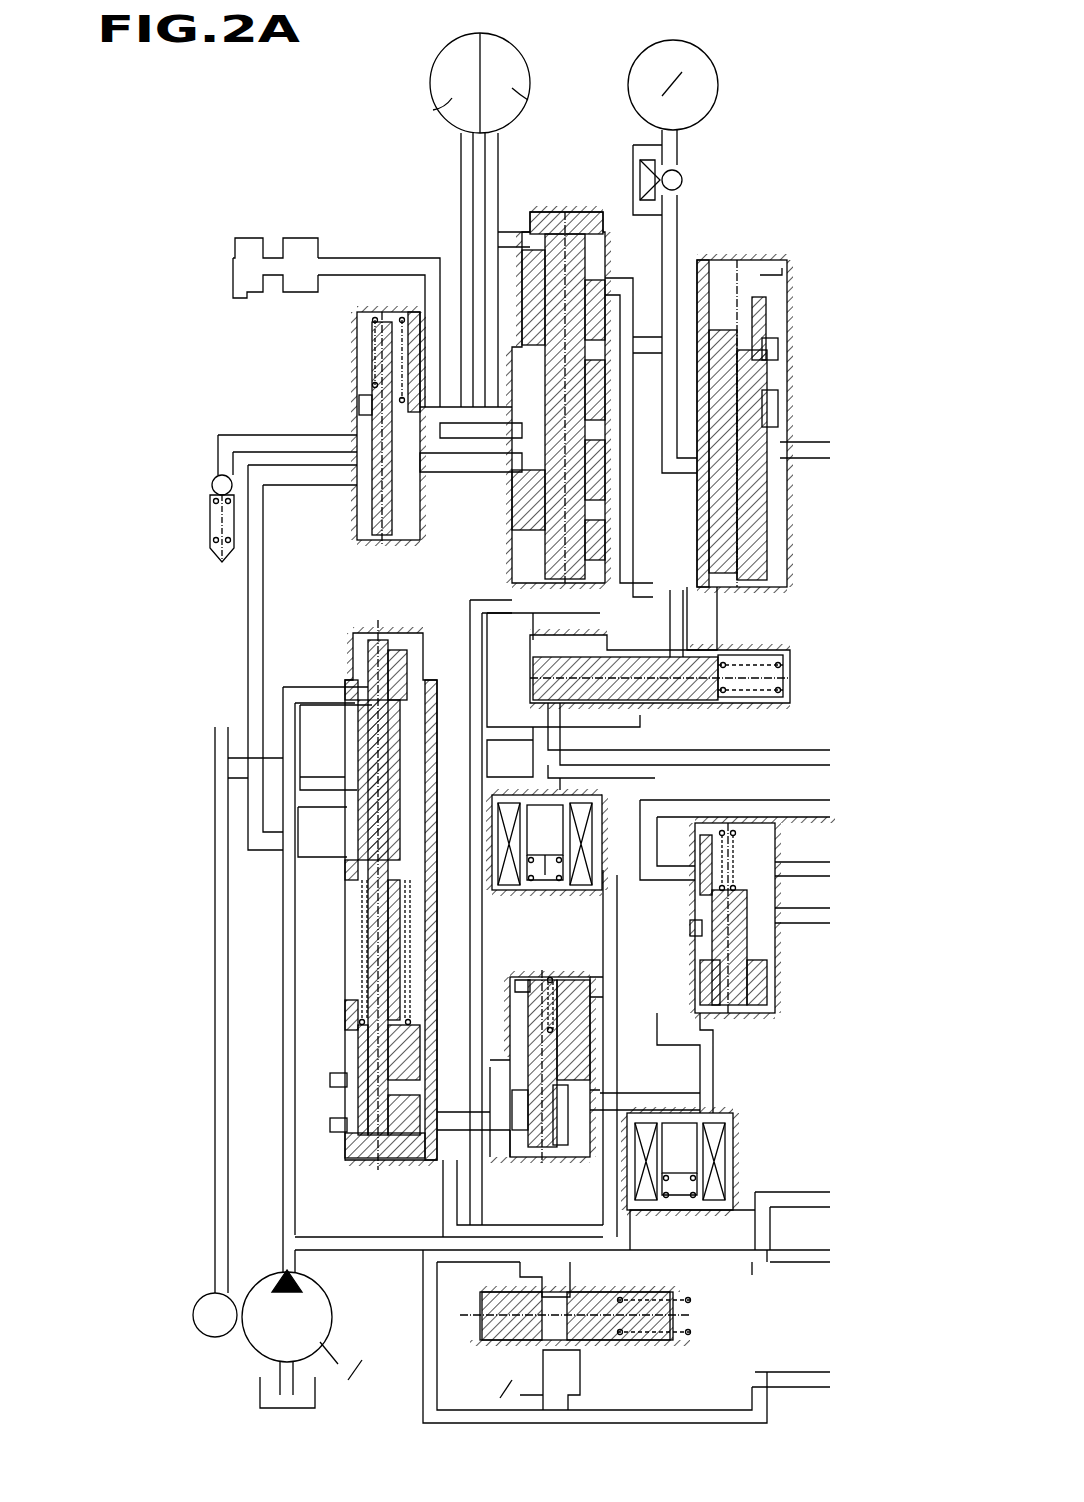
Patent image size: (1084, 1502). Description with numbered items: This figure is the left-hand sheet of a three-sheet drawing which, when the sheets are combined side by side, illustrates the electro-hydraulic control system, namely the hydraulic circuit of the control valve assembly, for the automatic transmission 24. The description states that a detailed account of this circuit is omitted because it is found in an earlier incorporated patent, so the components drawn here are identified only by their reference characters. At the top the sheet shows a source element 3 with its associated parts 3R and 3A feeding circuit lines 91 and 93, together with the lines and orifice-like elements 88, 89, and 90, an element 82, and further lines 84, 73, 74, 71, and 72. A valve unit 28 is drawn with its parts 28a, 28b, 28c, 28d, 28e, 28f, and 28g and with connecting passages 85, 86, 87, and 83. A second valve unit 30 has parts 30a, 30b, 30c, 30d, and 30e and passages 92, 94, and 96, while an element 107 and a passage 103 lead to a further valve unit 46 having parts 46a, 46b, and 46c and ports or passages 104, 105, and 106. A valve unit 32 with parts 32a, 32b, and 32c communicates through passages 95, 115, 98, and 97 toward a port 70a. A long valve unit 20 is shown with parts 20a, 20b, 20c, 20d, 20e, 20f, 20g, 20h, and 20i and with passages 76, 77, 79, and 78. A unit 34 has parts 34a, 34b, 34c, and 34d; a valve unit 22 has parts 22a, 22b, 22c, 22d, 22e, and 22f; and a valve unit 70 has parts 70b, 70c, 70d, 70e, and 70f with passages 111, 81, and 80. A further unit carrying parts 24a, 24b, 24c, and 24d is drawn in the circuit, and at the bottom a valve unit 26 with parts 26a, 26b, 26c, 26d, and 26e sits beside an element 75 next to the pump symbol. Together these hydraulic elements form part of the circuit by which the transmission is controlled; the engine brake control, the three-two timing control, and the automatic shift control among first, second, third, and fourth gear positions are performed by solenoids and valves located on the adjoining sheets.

The pressure source 3 is at (436, 62).
The pressure source port 3R is at (433, 110).
The pressure source port 3A is at (528, 100).
The oil passage 91 is at (461, 200).
The oil passage 93 is at (500, 146).
The oil passage 88 is at (392, 258).
The orifice 89 is at (318, 245).
The orifice 90 is at (235, 252).
The relief valve 82 is at (213, 450).
The oil passage 84 is at (248, 662).
The oil passage 73 is at (228, 733).
The oil passage 74 is at (228, 1058).
The oil passage 71 is at (283, 1008).
The oil passage 72 is at (320, 690).
The pressure control valve 28 is at (368, 427).
The spring 28a is at (378, 316).
The spool 28b is at (372, 372).
The port 28c is at (364, 438).
The port 28d is at (362, 480).
The port 28e is at (366, 400).
The port 28f is at (380, 532).
The port 28g is at (395, 525).
The oil passage 85 is at (430, 340).
The oil passage 86 is at (450, 440).
The oil passage 87 is at (435, 470).
The oil passage 83 is at (440, 475).
The shift valve 30 is at (554, 369).
The port 30a is at (520, 548).
The spool 30b is at (590, 262).
The port 30c is at (512, 515).
The port 30d is at (510, 575).
The plunger 30e is at (553, 215).
The oil passage 92 is at (545, 190).
The oil passage 94 is at (612, 282).
The oil passage 96 is at (688, 608).
The check valve 107 is at (690, 170).
The oil passage 103 is at (712, 255).
The lock-up control valve 46 is at (741, 395).
The spool 46a is at (725, 565).
The plunger 46b is at (768, 312).
The port 46c is at (670, 504).
The port 104 is at (770, 410).
The port 105 is at (770, 355).
The oil passage 106 is at (818, 460).
The shift valve 32 is at (643, 674).
The spring 32a is at (784, 705).
The spool 32b is at (545, 650).
The port 32c is at (545, 672).
The oil passage 95 is at (600, 632).
The oil passage 115 is at (735, 750).
The oil passage 98 is at (505, 777).
The oil passage 97 is at (655, 782).
The port 70a is at (703, 825).
The manual valve 20 is at (378, 880).
The spring 20a is at (360, 950).
The spool 20b is at (365, 642).
The port 20c is at (350, 1045).
The land 20d is at (410, 705).
The port 20e is at (355, 850).
The port 20f is at (350, 770).
The port 20g is at (356, 728).
The port 20h is at (356, 870).
The spring 20i is at (415, 1030).
The oil passage 76 is at (443, 1160).
The oil passage 77 is at (443, 1210).
The oil passage 79 is at (470, 975).
The oil passage 78 is at (615, 875).
The solenoid valve 34 is at (534, 862).
The solenoid coil 34a is at (595, 835).
The valve body 34b is at (545, 843).
The port 34c is at (598, 798).
The port 34d is at (492, 873).
The pressure regulator valve 22 is at (513, 1072).
The spring 22a is at (568, 978).
The port 22b is at (522, 975).
The land 22c is at (540, 1065).
The port 22d is at (525, 1120).
The spool 22e is at (528, 1030).
The port 22f is at (573, 1132).
The accumulator control valve 70 is at (733, 932).
The land 70b is at (705, 866).
The port 70c is at (695, 985).
The spool 70d is at (700, 912).
The port 70e is at (692, 930).
The spring 70f is at (755, 850).
The oil passage 111 is at (800, 870).
The oil passage 81 is at (713, 1051).
The oil passage 80 is at (645, 1103).
The automatic transmission 24 is at (713, 1153).
The solenoid coil 24a is at (740, 1160).
The valve body 24b is at (679, 1160).
The port 24c is at (738, 1138).
The port 24d is at (700, 1192).
The pressure regulating valve 26 is at (626, 1336).
The spring 26a is at (683, 1292).
The spool 26b is at (612, 1295).
The port 26c is at (485, 1345).
The port 26d is at (585, 1290).
The land 26e is at (495, 1290).
The oil strainer 75 is at (228, 1292).